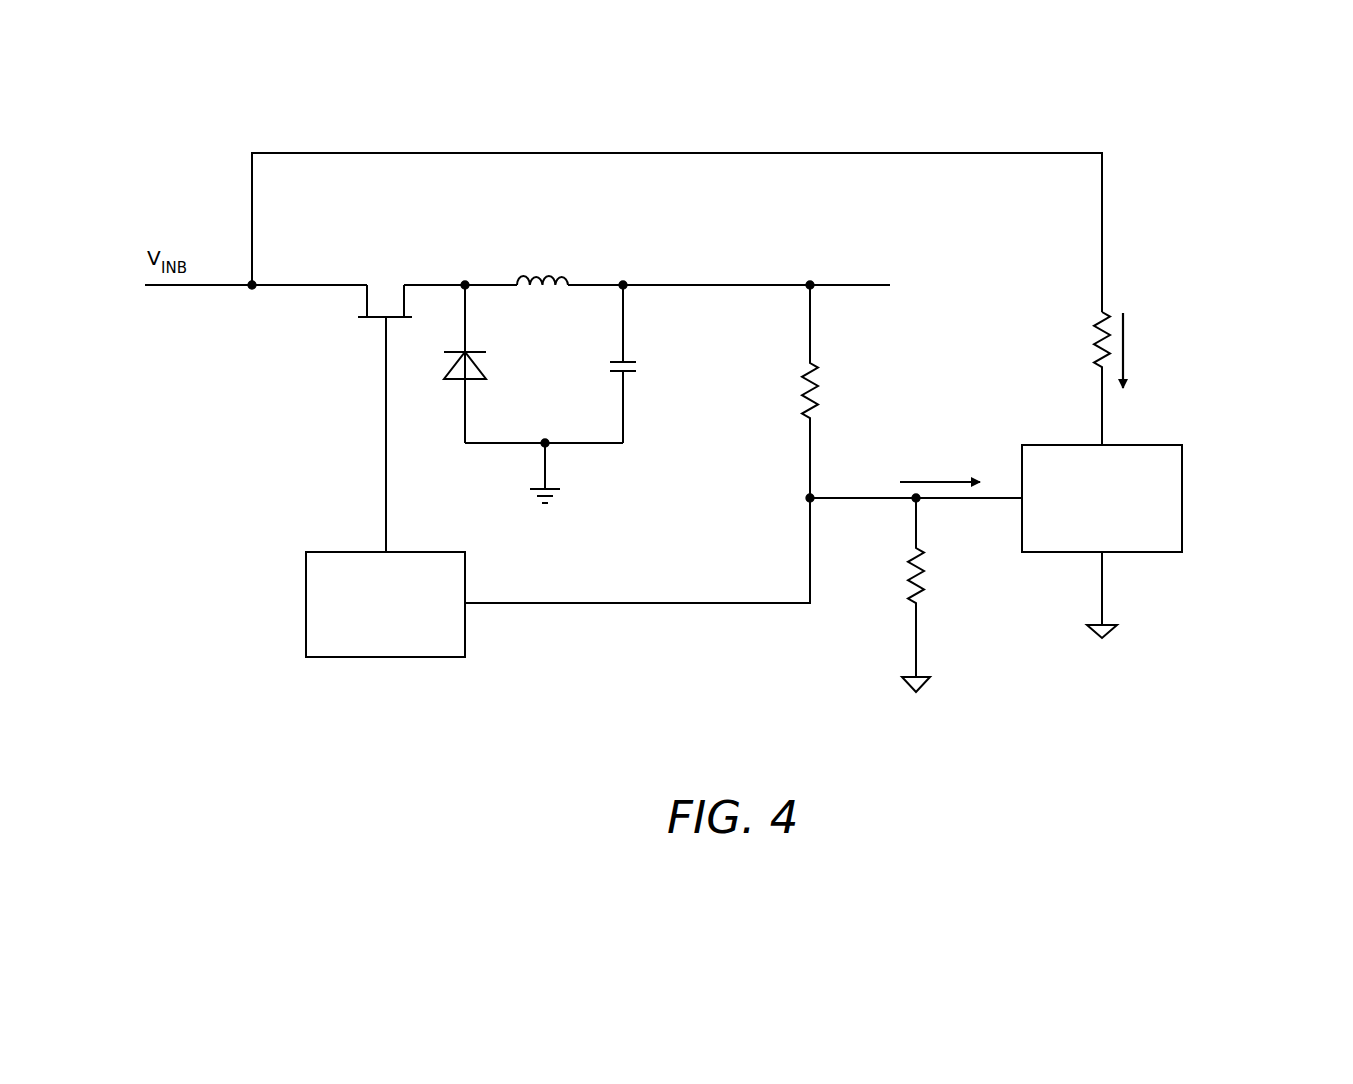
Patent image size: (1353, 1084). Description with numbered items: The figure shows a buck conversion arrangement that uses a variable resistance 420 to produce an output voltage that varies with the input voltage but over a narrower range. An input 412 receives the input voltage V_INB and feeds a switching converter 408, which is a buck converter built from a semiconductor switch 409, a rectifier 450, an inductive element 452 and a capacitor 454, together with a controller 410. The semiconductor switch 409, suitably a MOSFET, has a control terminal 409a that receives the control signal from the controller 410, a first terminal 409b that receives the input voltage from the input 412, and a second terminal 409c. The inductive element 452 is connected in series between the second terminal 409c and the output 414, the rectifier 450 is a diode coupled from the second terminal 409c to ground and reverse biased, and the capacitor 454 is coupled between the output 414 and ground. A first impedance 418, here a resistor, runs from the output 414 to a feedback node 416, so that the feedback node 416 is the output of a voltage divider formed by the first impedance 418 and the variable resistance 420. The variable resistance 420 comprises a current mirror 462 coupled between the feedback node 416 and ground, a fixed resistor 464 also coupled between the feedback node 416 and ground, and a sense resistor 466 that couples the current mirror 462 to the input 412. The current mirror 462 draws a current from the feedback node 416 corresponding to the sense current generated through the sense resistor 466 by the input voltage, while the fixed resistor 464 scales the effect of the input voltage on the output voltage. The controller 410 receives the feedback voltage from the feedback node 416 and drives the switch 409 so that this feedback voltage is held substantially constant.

The switching converter 408 is at (655, 247).
The semiconductor switch 409 is at (394, 248).
The control terminal 409a is at (380, 320).
The first terminal 409b is at (367, 285).
The second terminal 409c is at (404, 285).
The controller 410 is at (386, 658).
The input 412 is at (190, 288).
The output 414 is at (865, 285).
The feedback node 416 is at (805, 500).
The first impedance 418 is at (820, 378).
The variable resistance 420 is at (1210, 427).
The rectifier 450 is at (487, 375).
The inductive element 452 is at (540, 272).
The capacitor 454 is at (633, 373).
The current mirror 462 is at (1183, 517).
The fixed resistor 464 is at (922, 585).
The sense resistor 466 is at (1093, 340).